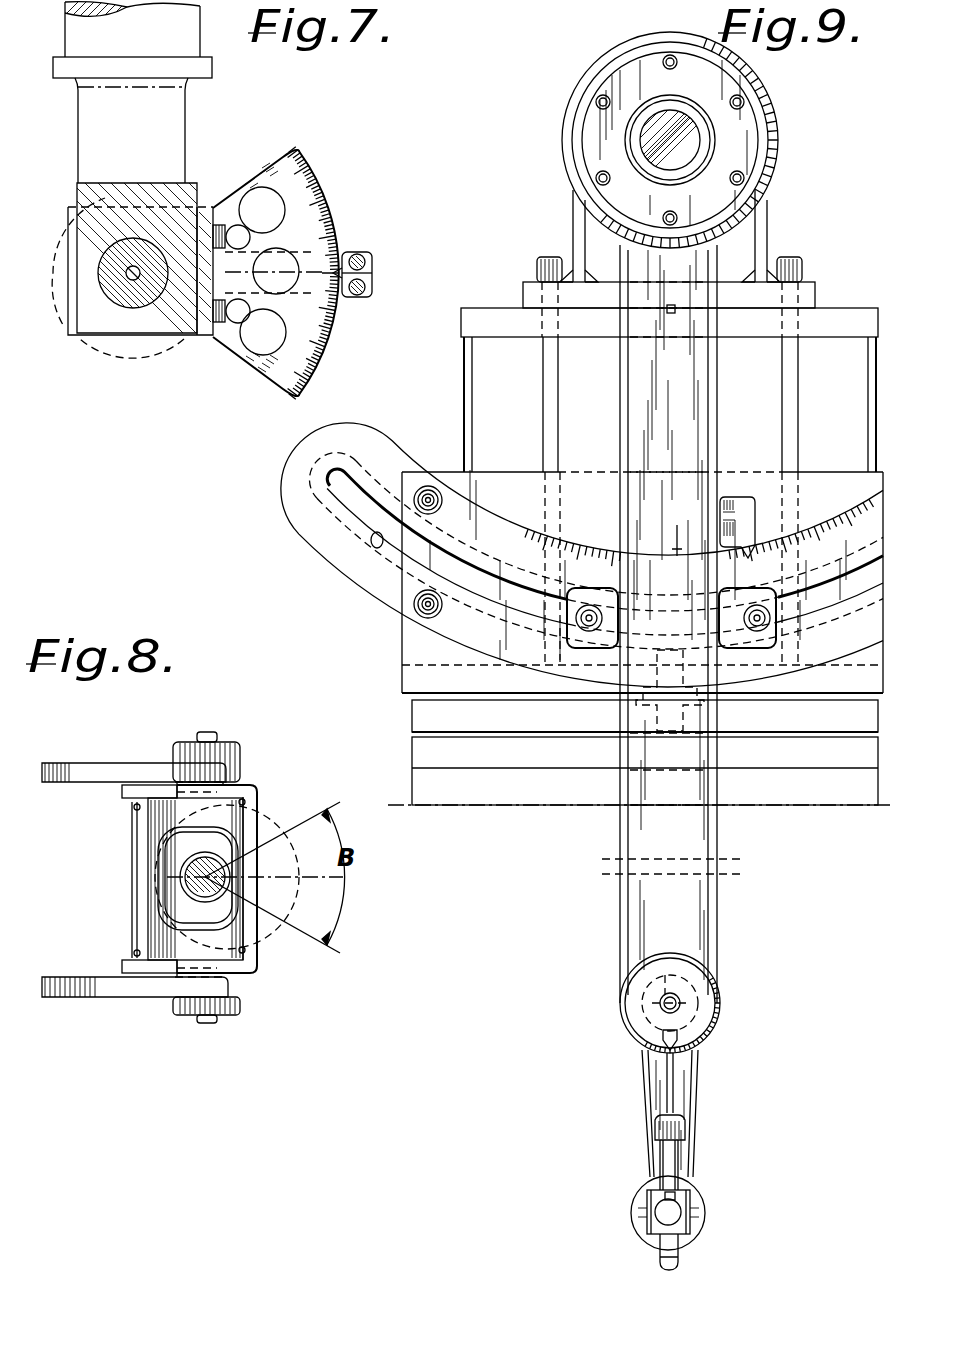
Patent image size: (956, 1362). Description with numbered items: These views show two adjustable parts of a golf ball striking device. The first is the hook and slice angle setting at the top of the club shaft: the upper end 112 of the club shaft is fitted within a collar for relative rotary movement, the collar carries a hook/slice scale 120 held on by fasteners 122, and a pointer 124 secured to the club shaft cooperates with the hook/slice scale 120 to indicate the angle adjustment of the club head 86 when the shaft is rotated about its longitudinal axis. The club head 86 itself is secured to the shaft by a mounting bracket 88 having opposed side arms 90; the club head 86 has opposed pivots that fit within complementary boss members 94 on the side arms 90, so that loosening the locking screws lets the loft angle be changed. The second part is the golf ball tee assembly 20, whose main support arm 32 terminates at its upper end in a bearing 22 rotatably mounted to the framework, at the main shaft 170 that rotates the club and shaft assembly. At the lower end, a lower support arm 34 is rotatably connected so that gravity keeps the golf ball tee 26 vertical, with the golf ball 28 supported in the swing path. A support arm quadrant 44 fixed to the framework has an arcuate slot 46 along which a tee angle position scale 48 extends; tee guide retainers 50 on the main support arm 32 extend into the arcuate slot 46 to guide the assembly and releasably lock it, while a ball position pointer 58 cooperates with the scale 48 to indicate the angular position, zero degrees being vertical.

In FIG. 9, the golf ball tee assembly 20 is at (618, 431).
In FIG. 9, the bearing 22 is at (762, 153).
In FIG. 9, the golf ball tee 26 is at (676, 1069).
In FIG. 9, the golf ball 28 is at (722, 963).
In FIG. 9, the main support arm 32 is at (647, 455).
In FIG. 9, the lower support arm 34 is at (683, 1108).
In FIG. 9, the support arm quadrant 44 is at (321, 541).
In FIG. 9, the arcuate slot 46 is at (372, 556).
In FIG. 9, the tee angle position scale 48 is at (589, 541).
In FIG. 9, the tee guide retainers 50 is at (589, 631).
In FIG. 9, the ball position pointer 58 is at (744, 494).
In FIG. 9, the main shaft 170 is at (670, 138).
In FIG. 8, the club head 86 is at (152, 917).
In FIG. 8, the mounting bracket 88 is at (130, 823).
In FIG. 8, the side arms 90 is at (73, 772).
In FIG. 8, the boss members 94 is at (240, 1000).
In FIG. 7, the upper end of club shaft 112 is at (128, 282).
In FIG. 7, the hook/slice scale 120 is at (355, 252).
In FIG. 7, the fasteners 122 is at (219, 336).
In FIG. 7, the pointer 124 is at (330, 211).